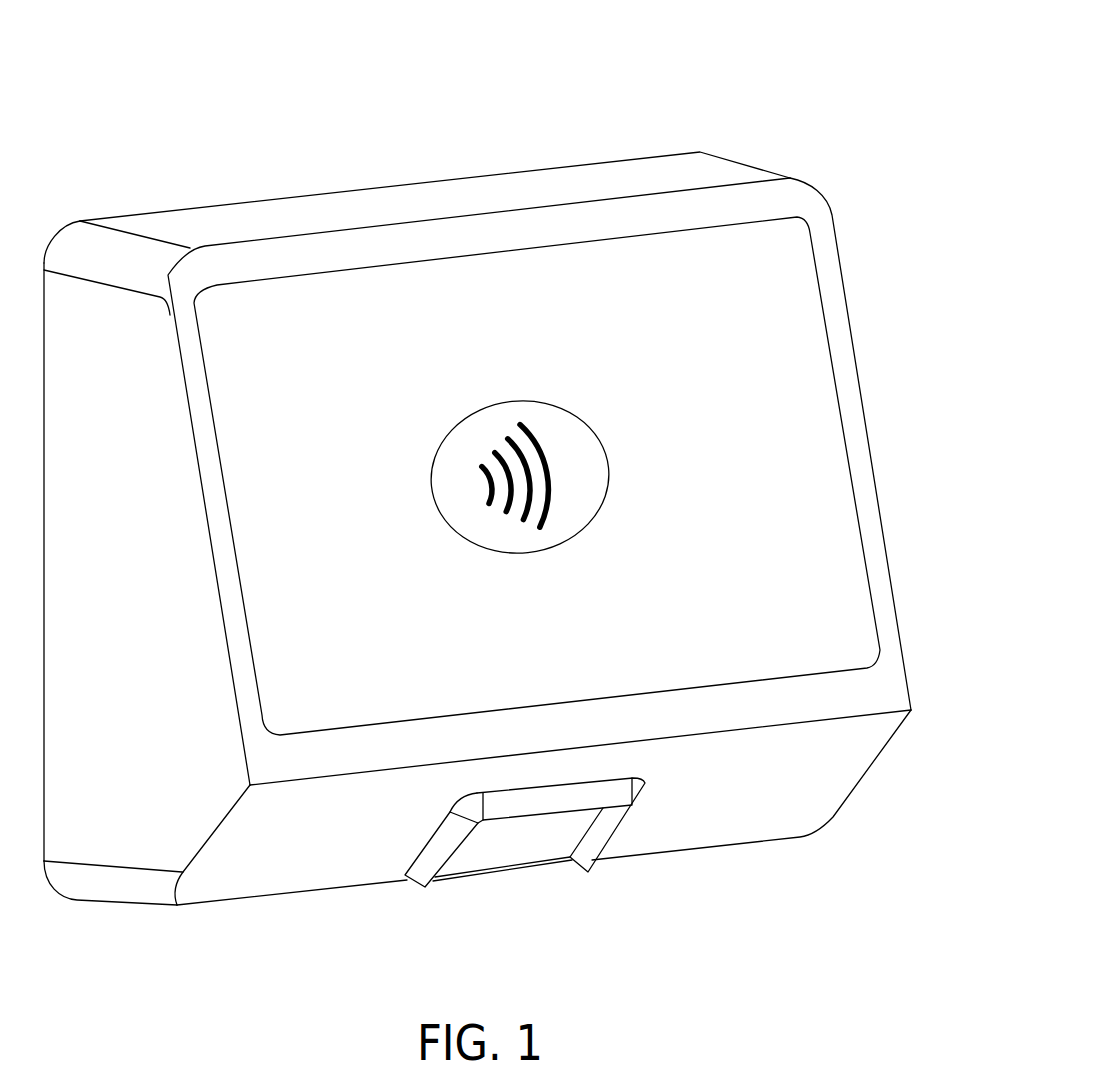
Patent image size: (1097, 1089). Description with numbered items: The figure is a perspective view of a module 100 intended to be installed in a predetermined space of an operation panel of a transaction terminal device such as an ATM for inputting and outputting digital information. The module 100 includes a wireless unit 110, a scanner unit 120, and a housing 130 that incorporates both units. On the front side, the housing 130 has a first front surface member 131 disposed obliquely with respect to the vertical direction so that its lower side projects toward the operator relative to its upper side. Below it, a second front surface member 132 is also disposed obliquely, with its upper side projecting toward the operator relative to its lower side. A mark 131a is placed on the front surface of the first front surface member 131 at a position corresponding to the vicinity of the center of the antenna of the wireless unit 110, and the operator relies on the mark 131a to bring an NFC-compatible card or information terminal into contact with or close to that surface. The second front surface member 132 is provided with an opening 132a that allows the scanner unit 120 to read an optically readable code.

The module 100 is at (655, 78).
The wireless unit 110 is at (542, 373).
The scanner unit 120 is at (522, 840).
The housing 130 is at (743, 160).
The first front surface member 131 is at (855, 407).
The mark 131a is at (609, 468).
The second front surface member 132 is at (850, 775).
The opening 132a is at (595, 850).